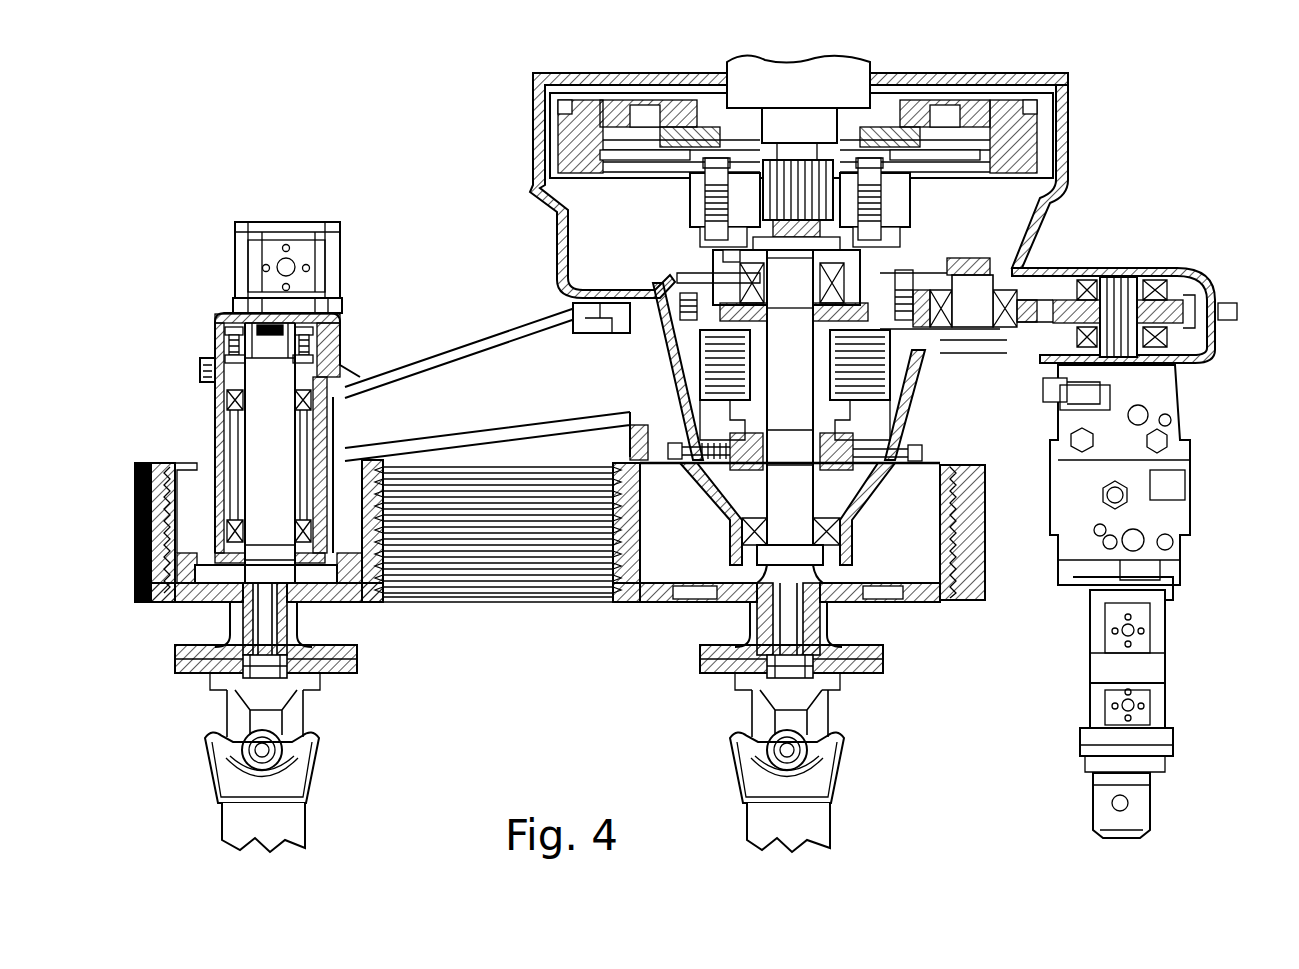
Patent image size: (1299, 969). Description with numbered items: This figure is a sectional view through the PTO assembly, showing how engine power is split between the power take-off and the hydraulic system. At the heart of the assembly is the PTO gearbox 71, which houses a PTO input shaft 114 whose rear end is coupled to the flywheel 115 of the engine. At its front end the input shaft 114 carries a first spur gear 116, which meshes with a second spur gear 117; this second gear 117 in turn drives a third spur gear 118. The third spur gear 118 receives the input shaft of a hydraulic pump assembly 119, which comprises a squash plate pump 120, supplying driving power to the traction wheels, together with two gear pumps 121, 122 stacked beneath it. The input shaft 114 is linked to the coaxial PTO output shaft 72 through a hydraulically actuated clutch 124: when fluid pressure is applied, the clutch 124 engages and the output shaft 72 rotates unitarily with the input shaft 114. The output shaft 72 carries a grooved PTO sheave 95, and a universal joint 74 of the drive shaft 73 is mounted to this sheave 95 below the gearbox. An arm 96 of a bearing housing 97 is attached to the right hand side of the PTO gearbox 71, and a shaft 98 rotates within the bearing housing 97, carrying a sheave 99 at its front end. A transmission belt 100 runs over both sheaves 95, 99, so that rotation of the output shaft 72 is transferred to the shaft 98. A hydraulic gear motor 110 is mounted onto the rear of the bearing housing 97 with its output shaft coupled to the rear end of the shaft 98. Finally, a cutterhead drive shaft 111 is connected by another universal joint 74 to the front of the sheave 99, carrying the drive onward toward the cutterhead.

The PTO gearbox 71 is at (538, 258).
The output shaft 72 is at (787, 503).
The drive shaft 73 is at (817, 822).
The universal joint 74 is at (833, 748).
The PTO sheave 95 is at (927, 605).
The arm 96 is at (452, 377).
The bearing housing 97 is at (213, 483).
The shaft 98 is at (268, 450).
The sheave 99 is at (182, 600).
The transmission belt 100 is at (533, 588).
The hydraulic gear motor 110 is at (262, 273).
The cutterhead drive shaft 111 is at (290, 822).
The PTO input shaft 114 is at (797, 162).
The flywheel 115 is at (1037, 148).
The first spur gear 116 is at (680, 306).
The second spur gear 117 is at (903, 290).
The third spur gear 118 is at (1180, 297).
The hydraulic pump assembly 119 is at (1068, 644).
The squash plate pump 120 is at (1167, 500).
The gear pump 121 is at (1140, 707).
The gear pump 122 is at (1143, 807).
The hydraulically actuated clutch 124 is at (707, 357).